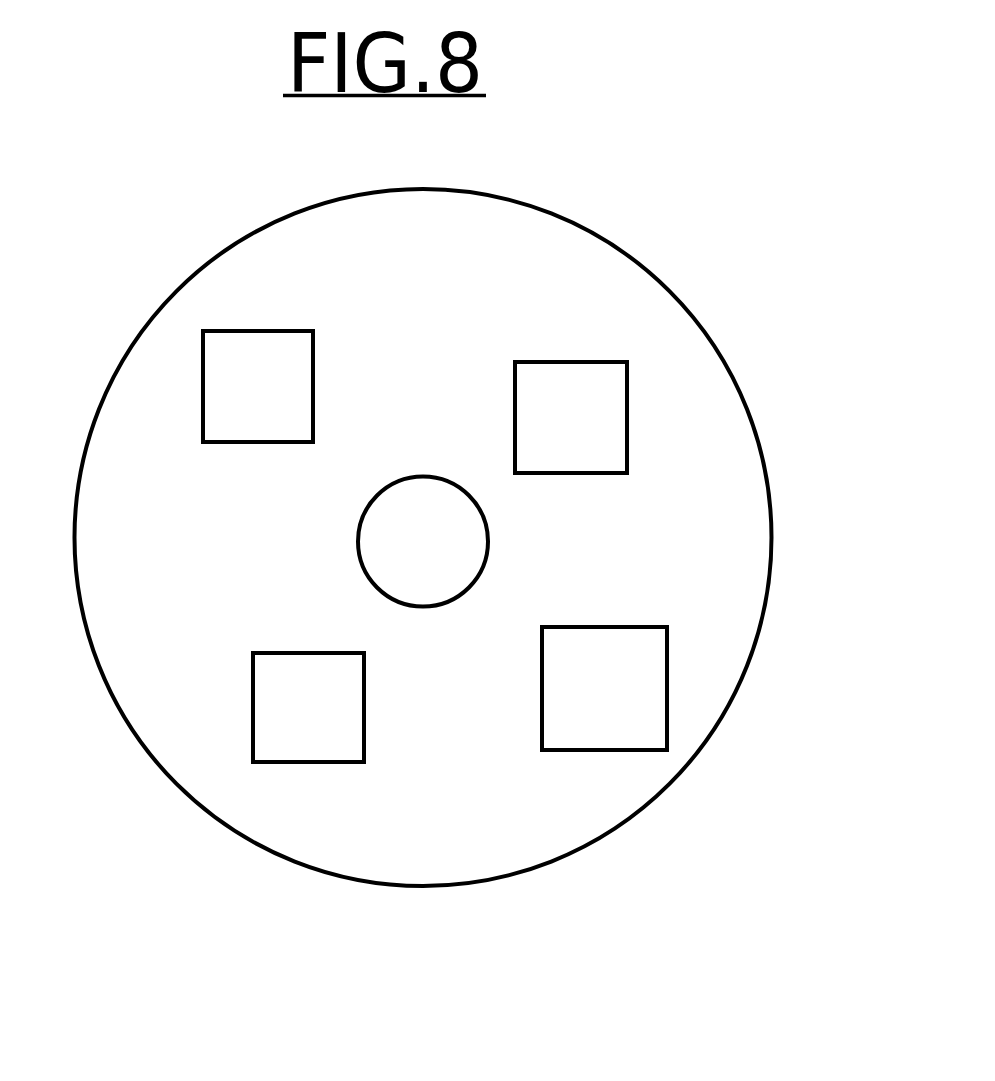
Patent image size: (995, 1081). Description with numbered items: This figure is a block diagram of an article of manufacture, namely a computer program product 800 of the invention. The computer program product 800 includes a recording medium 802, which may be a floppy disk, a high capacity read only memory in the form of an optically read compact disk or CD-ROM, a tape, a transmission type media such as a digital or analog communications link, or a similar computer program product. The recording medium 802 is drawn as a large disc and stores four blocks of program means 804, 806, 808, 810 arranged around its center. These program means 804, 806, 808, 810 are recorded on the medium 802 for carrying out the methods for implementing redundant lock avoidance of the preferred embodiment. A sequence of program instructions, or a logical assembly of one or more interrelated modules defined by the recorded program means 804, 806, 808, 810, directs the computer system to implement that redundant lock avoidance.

The computer program product 800 is at (729, 300).
The recording medium 802 is at (126, 327).
The program means 804 is at (308, 707).
The program means 806 is at (604, 688).
The program means 808 is at (571, 417).
The program means 810 is at (258, 386).